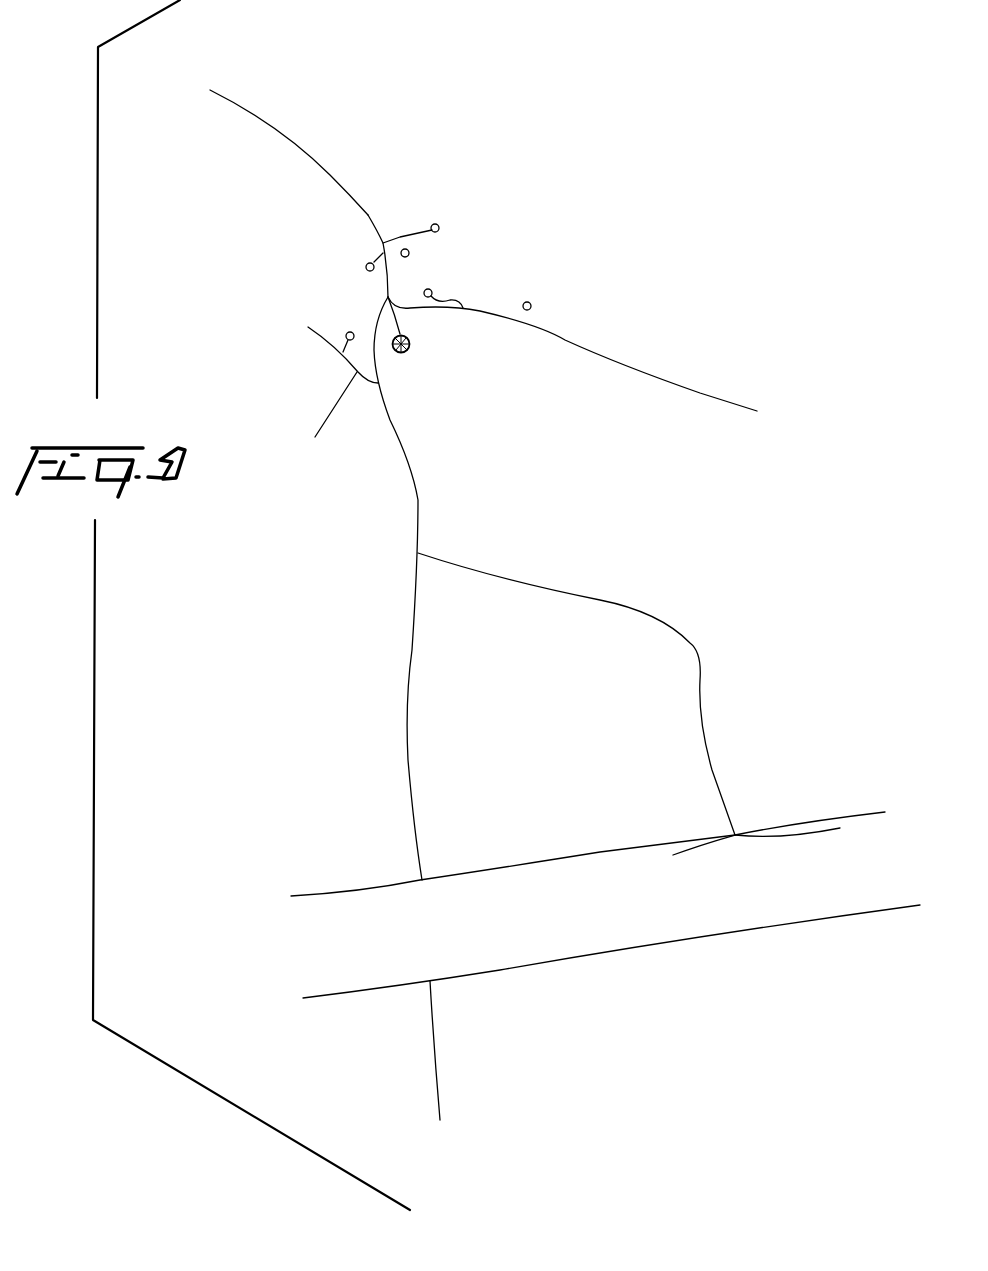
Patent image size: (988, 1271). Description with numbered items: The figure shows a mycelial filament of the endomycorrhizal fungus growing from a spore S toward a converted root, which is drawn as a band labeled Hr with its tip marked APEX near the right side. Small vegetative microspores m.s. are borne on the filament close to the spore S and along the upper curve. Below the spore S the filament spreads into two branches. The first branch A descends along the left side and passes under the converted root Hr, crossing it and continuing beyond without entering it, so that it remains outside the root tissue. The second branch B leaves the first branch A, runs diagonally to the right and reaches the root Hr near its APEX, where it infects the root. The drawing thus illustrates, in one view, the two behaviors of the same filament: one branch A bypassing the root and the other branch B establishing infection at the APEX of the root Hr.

The spore S is at (407, 333).
The vegetative microspore m.s. is at (572, 350).
The first branch A is at (417, 667).
The second branch B is at (589, 694).
The heart region / horizontal vessel Hr is at (605, 916).
The apex of heart APEX is at (779, 844).